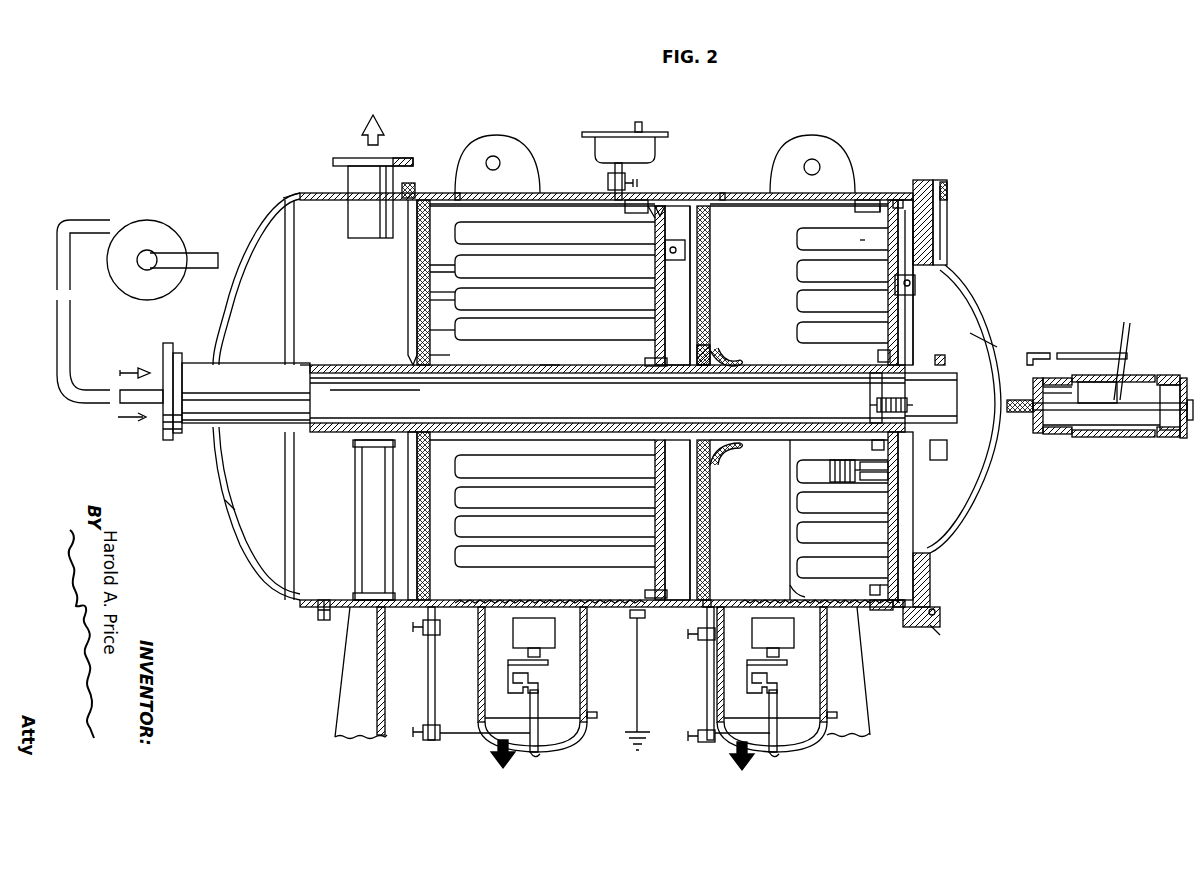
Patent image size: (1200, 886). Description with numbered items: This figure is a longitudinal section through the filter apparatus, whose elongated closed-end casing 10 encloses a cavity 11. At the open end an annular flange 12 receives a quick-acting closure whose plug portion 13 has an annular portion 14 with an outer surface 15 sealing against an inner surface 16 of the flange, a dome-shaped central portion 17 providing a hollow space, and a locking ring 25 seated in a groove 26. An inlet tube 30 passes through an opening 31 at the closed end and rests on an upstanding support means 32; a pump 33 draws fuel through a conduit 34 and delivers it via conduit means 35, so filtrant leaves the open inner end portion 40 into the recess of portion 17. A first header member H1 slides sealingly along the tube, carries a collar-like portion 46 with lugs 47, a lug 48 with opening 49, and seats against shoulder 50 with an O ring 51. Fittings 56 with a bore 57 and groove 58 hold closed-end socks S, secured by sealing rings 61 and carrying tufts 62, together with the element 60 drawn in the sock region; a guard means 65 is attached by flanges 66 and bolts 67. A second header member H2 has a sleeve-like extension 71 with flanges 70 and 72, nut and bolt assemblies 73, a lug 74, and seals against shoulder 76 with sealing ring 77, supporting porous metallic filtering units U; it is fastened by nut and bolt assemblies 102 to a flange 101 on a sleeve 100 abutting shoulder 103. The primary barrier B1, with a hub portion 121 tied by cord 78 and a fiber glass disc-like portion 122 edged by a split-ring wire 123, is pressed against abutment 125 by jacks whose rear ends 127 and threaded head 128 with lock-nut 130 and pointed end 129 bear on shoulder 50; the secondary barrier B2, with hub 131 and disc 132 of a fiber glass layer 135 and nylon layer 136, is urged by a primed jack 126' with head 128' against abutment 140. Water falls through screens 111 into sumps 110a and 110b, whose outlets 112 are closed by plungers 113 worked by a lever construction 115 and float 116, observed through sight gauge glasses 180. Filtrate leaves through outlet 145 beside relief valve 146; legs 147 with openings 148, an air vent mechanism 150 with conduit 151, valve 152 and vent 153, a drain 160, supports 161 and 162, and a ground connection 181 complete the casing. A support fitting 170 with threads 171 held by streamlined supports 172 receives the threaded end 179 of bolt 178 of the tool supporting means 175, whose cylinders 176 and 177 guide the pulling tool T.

The casing 10 is at (283, 198).
The cavity 11 is at (232, 505).
The annular flange 12 is at (915, 627).
The central plug portion 13 is at (1010, 294).
The annular portion 14 is at (933, 218).
The outer surface 15 is at (947, 200).
The inner surface 16 is at (940, 182).
The central portion 17 is at (995, 342).
The locking ring 25 is at (938, 610).
The groove 26 is at (944, 638).
The inlet tube 30 is at (338, 365).
The opening 31 is at (207, 360).
The support means 32 is at (362, 524).
The pump 33 is at (165, 233).
The conduit 34 is at (208, 252).
The conduit means 35 is at (70, 342).
The inner end portion 40 is at (947, 445).
The collar-like portion 46 is at (915, 350).
The lugs 47 is at (945, 360).
The lug 48 is at (920, 290).
The opening 49 is at (900, 288).
The shoulder 50 is at (893, 205).
The O ring 51 is at (880, 612).
The fitting 56 is at (888, 478).
The bore 57 is at (888, 468).
The circumferential groove 58 is at (875, 478).
The partition 60 is at (797, 483).
The sealing rings 61 is at (872, 445).
The tufts 62 is at (835, 460).
The guard means 65 is at (790, 588).
The attaching flanges 66 is at (882, 588).
The bolts 67 is at (870, 590).
The flange 70 is at (696, 352).
The sleeve-like extension 71 is at (752, 364).
The flange 72 is at (878, 352).
The nut and bolt assemblies 73 is at (880, 385).
The lug 74 is at (680, 262).
The shoulder 76 is at (644, 594).
The sealing ring 77 is at (668, 212).
The cord 78 is at (446, 280).
The sleeve 100 is at (542, 362).
The flange 101 is at (644, 361).
The nut and bolt assemblies 102 is at (720, 392).
The annular shoulder 103 is at (410, 360).
The water-collecting sump 110a is at (723, 758).
The water-collecting sump 110b is at (486, 754).
The screen members 111 is at (525, 600).
The outlet 112 is at (540, 754).
The plungers 113 is at (490, 716).
The double purchase lever construction 115 is at (495, 666).
The float 116 is at (653, 637).
The hub portion 121 is at (722, 455).
The disc-like portion 122 is at (710, 550).
The split-ring wire 123 is at (700, 612).
The annular angle bar abutment 125 is at (710, 232).
The jack 126' is at (659, 199).
The rear ends 127 is at (452, 200).
The threaded head 128 is at (843, 239).
The threaded head 128' is at (655, 193).
The pointed end portion 129 is at (645, 212).
The lock-nut 130 is at (860, 206).
The hub portion 131 is at (455, 373).
The disc-like portion 132 is at (462, 328).
The fiber glass layer 135 is at (465, 300).
The nylon layer 136 is at (430, 300).
The annular abutment 140 is at (410, 215).
The outlet 145 is at (348, 224).
The pressure relief valve 146 is at (415, 185).
The legs 147 is at (500, 136).
The central opening 148 is at (500, 160).
The air vent mechanism 150 is at (675, 131).
The conduit 151 is at (607, 178).
The valve 152 is at (632, 182).
The vent 153 is at (637, 124).
The drain 160 is at (315, 615).
The support member 161 is at (345, 658).
The support member 162 is at (870, 705).
The support fitting 170 is at (907, 403).
The screw threads 171 is at (910, 420).
The streamlined supports 172 is at (877, 410).
The tool supporting means 175 is at (1100, 367).
The first open-ended cylinder 176 is at (1165, 440).
The second open-ended cylinder 177 is at (1070, 437).
The elongated bolt 178 is at (1120, 392).
The threaded end portion 179 is at (1025, 415).
The sight gauge glasses 180 is at (428, 670).
The electrical ground connection 181 is at (635, 670).
The primary selectively permeable barrier B1 is at (710, 300).
The secondary selectively permeable barrier B2 is at (429, 254).
The first header member H1 is at (898, 228).
The second header member H2 is at (665, 300).
The sock S is at (842, 403).
The pulling tool T is at (1132, 335).
The porous metallic filtering units U is at (555, 394).